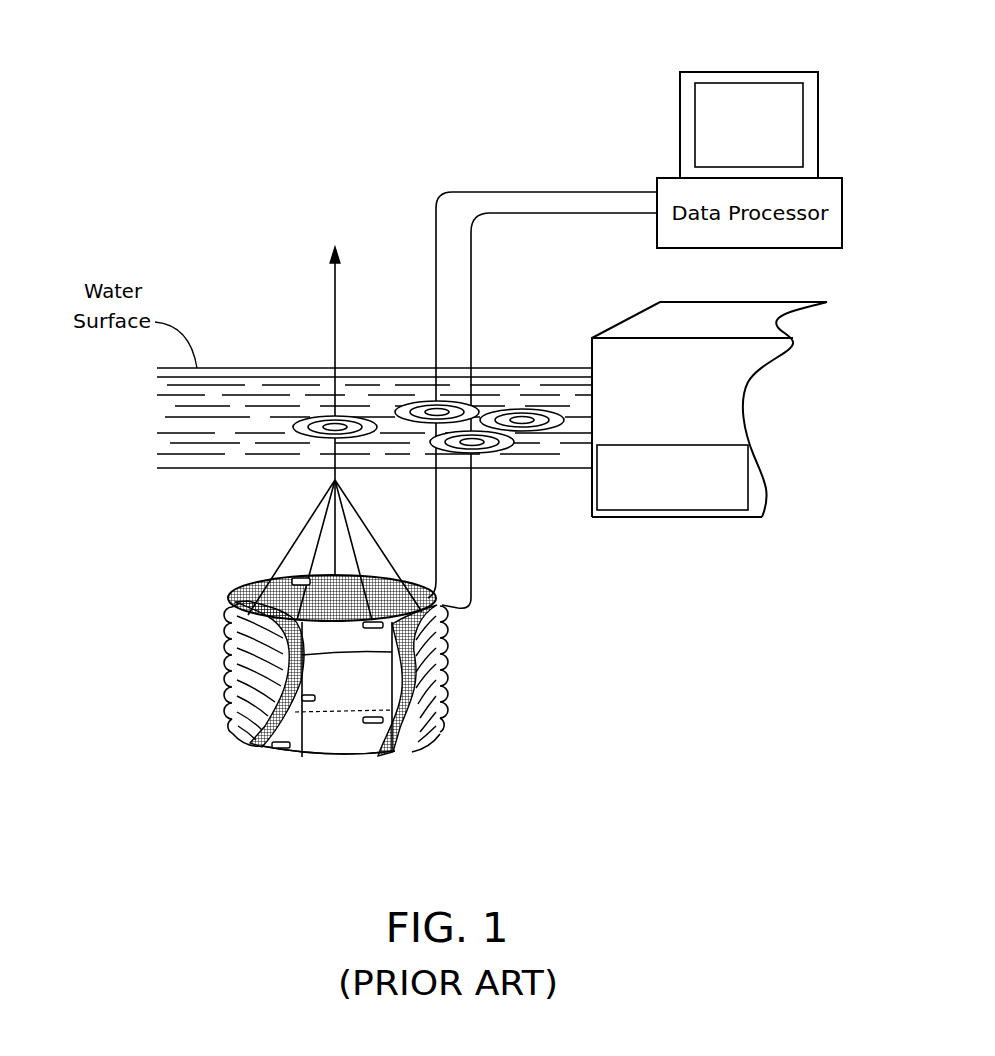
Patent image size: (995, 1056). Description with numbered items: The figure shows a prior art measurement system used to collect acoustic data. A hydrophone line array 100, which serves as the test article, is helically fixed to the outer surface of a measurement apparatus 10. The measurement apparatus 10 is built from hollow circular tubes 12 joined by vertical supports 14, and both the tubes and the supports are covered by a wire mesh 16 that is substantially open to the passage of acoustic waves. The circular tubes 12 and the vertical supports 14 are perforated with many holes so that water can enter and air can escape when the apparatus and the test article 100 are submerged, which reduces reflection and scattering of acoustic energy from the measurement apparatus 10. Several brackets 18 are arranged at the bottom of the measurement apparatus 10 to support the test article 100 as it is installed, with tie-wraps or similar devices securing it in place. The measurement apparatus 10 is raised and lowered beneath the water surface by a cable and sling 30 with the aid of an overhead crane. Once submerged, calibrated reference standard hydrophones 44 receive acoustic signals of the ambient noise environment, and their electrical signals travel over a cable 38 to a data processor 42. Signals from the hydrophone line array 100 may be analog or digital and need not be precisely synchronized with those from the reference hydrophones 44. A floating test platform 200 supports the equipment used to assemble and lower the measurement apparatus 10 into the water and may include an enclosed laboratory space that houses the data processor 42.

The measurement apparatus 10 is at (338, 650).
The hollow circular tubes 12 is at (248, 592).
The vertical supports 14 is at (377, 757).
The wire mesh 16 is at (258, 746).
The brackets 18 is at (295, 757).
The cable and sling 30 is at (335, 305).
The cable 38 is at (482, 192).
The data processor 42 is at (748, 72).
The calibrated reference standard hydrophones 44 is at (275, 749).
The hydrophone line array 100 is at (442, 650).
The floating test platform 200 is at (705, 517).